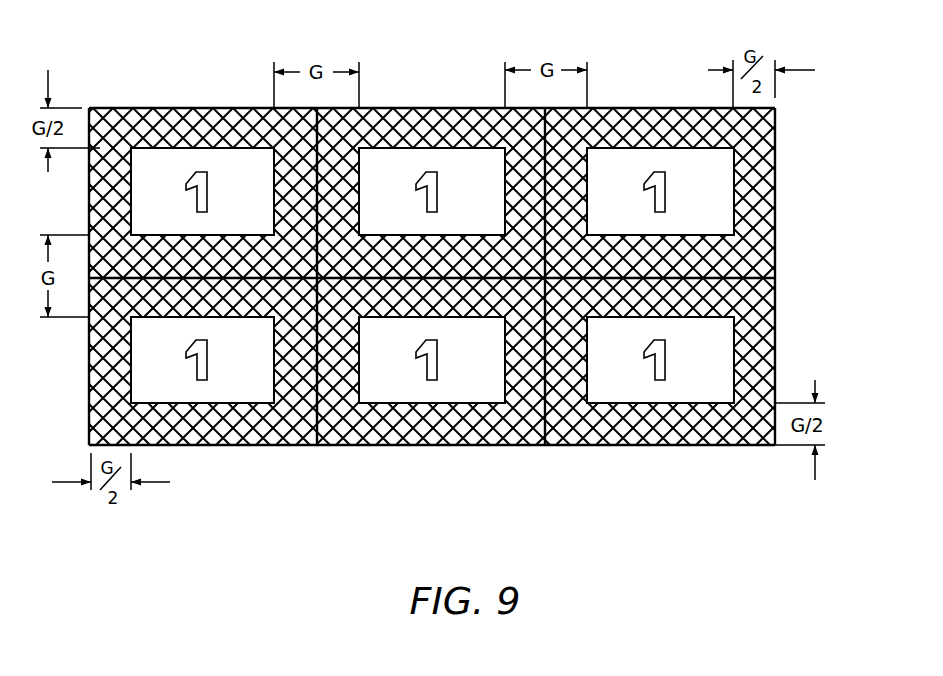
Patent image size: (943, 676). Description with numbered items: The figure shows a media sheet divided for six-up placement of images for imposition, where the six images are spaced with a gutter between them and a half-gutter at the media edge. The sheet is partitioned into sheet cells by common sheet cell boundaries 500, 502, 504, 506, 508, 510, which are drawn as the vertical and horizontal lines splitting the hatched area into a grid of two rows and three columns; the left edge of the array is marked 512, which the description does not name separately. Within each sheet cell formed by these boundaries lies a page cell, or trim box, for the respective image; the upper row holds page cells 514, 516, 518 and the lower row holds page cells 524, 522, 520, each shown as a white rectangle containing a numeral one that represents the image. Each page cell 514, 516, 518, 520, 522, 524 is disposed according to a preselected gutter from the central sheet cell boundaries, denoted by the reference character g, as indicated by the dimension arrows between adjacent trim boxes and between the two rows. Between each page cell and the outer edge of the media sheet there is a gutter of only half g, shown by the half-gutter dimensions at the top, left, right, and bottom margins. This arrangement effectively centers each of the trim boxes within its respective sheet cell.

The sheet cell boundary 500 is at (313, 138).
The sheet cell boundary 502 is at (543, 140).
The sheet cell boundary 504 is at (776, 229).
The sheet cell boundary 506 is at (560, 425).
The sheet cell boundary 508 is at (316, 395).
The sheet cell boundary 510 is at (590, 423).
The left boundary of tile array 512 is at (90, 368).
The page cell 514 is at (158, 140).
The page cell 516 is at (435, 140).
The page cell 518 is at (662, 140).
The page cell 520 is at (692, 413).
The page cell 522 is at (478, 432).
The page cell 524 is at (195, 408).